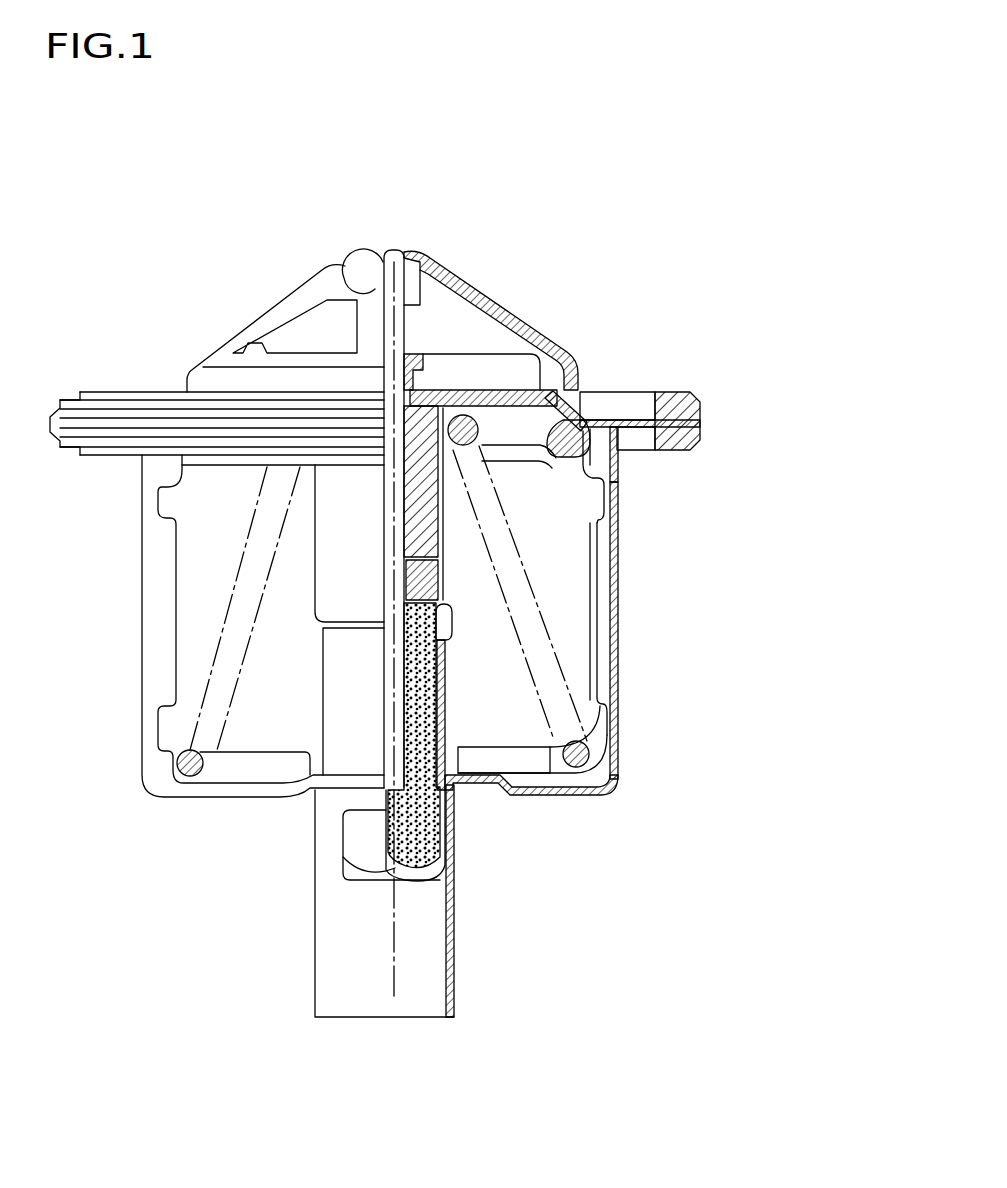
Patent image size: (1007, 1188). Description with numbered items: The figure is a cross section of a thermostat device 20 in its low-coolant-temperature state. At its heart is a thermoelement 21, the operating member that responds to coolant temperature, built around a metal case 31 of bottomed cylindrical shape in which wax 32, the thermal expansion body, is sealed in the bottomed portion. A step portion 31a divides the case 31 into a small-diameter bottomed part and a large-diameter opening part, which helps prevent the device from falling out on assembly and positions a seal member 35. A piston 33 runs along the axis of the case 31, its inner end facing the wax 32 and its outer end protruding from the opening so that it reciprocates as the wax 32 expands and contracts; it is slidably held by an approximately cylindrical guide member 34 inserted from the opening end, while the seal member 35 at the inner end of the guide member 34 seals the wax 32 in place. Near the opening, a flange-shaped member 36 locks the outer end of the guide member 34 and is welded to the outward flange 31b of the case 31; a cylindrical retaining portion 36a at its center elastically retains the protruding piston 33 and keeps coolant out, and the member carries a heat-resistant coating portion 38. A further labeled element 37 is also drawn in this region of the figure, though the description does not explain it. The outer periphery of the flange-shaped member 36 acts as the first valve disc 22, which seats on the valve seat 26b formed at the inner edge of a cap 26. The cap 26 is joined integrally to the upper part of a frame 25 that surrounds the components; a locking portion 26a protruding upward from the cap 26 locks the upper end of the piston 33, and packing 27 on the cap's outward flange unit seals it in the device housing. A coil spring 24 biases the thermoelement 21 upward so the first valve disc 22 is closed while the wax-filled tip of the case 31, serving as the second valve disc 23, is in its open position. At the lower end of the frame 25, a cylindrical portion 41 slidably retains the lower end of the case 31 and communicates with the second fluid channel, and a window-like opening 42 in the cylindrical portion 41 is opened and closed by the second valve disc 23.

The thermostat device 20 is at (110, 290).
The thermoelement 21 is at (322, 712).
The first valve disc 22 is at (578, 386).
The second valve disc 23 is at (453, 893).
The coil spring 24 is at (557, 733).
The frame 25 is at (620, 637).
The cap 26 is at (562, 352).
The locking portion 26a is at (387, 252).
The valve seat 26b is at (616, 446).
The packing 27 is at (673, 449).
The case 31 is at (600, 748).
The step portion 31a is at (613, 697).
The outward flange 31b is at (620, 557).
The wax 32 is at (433, 866).
The piston 33 is at (370, 273).
The guide member 34 is at (440, 530).
The seal member 35 is at (440, 583).
The flange-shaped member 36 is at (580, 385).
The retaining portion 36a is at (413, 358).
The plate 37 is at (477, 398).
The coating portion 38 is at (523, 388).
The cylindrical portion 41 is at (457, 980).
The opening 42 is at (357, 882).